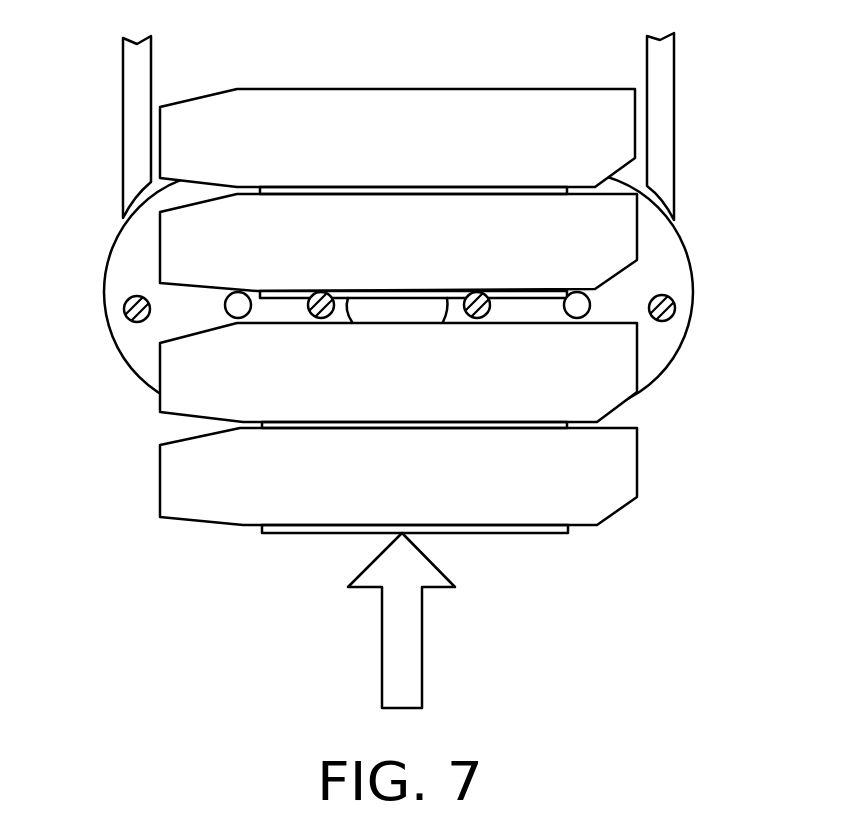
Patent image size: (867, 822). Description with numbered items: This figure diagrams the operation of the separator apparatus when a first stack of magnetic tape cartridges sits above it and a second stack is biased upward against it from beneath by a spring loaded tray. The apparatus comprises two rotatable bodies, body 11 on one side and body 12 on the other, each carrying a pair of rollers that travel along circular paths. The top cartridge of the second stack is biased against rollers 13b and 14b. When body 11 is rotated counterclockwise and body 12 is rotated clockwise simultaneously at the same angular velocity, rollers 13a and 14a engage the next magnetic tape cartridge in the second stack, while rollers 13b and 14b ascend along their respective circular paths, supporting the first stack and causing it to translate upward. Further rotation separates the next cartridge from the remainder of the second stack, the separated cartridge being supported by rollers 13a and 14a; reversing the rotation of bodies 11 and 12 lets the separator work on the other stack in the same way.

The body 11 is at (132, 253).
The body 12 is at (663, 259).
The roller 13a is at (126, 305).
The roller 13b is at (320, 292).
The roller 14a is at (674, 307).
The roller 14b is at (477, 292).